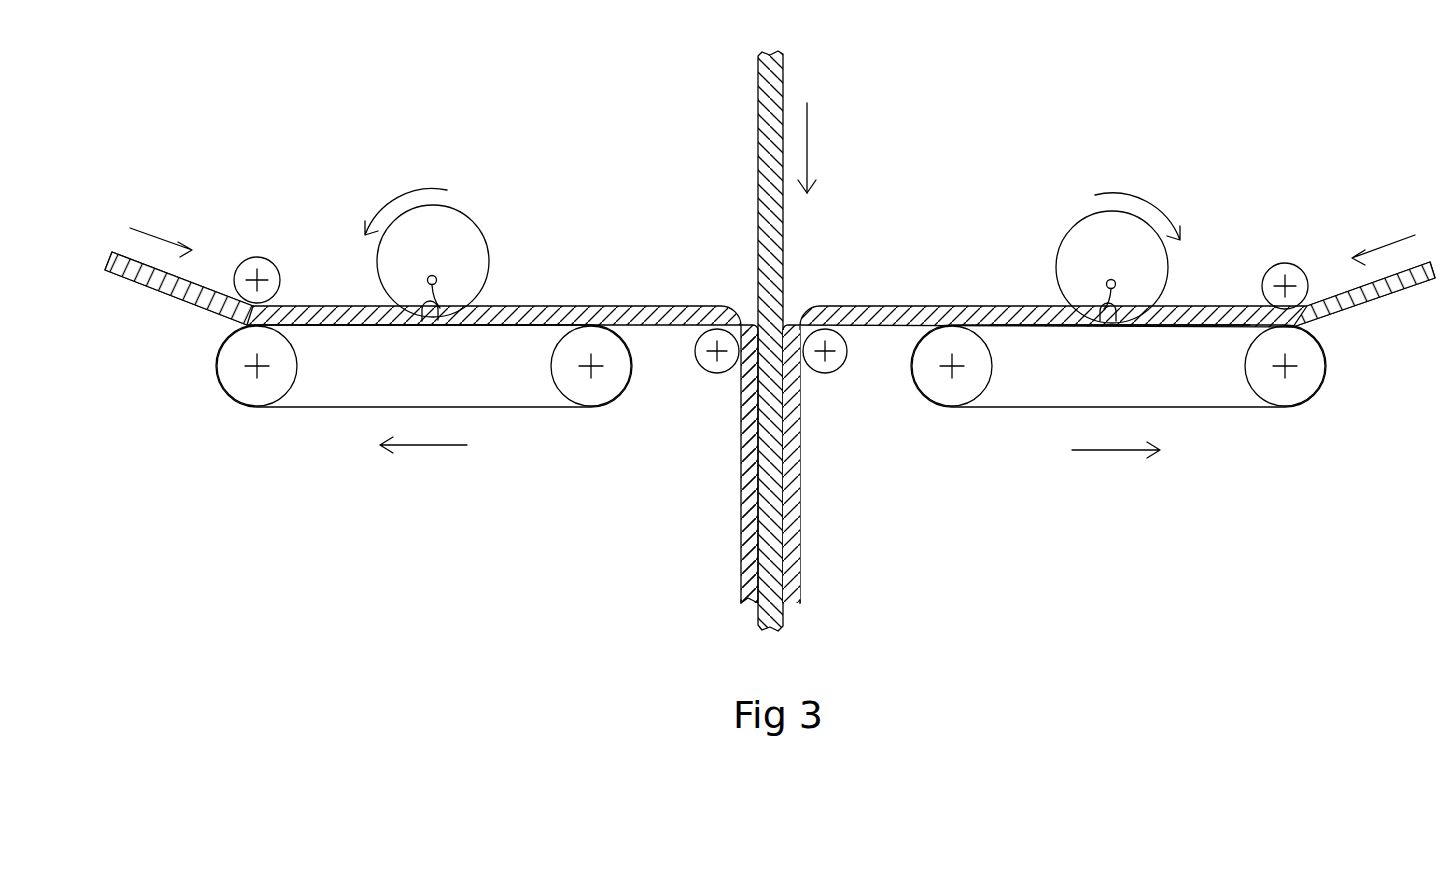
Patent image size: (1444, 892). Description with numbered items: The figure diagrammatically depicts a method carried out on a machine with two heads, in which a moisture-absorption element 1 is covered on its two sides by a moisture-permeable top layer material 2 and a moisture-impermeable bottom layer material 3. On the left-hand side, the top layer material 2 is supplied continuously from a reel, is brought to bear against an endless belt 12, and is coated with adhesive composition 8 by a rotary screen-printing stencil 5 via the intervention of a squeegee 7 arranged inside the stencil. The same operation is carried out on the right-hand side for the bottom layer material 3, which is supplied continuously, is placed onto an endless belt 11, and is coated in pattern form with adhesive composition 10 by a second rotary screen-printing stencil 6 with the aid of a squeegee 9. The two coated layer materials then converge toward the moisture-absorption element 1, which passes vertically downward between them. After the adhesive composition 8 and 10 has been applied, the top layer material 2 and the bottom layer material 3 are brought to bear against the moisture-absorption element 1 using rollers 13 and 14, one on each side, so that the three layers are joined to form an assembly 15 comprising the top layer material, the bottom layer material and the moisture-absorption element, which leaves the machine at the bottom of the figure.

The moisture-absorption element 1 is at (780, 88).
The moisture-permeable top layer material 2 is at (338, 303).
The moisture-impermeable bottom layer material 3 is at (958, 307).
The rotary screen-printing stencil 5 is at (472, 222).
The rotary screen-printing stencil 6 is at (1063, 235).
The squeegee 7 is at (441, 306).
The adhesive composition 8 is at (450, 323).
The squeegee 9 is at (1117, 295).
The adhesive composition 10 is at (1103, 323).
The endless belt 11 is at (1192, 413).
The endless belt 12 is at (333, 407).
The roller 13 is at (700, 367).
The roller 14 is at (840, 372).
The assembly comprising top layer material, bottom layer material and moisture-absor 15 is at (798, 580).